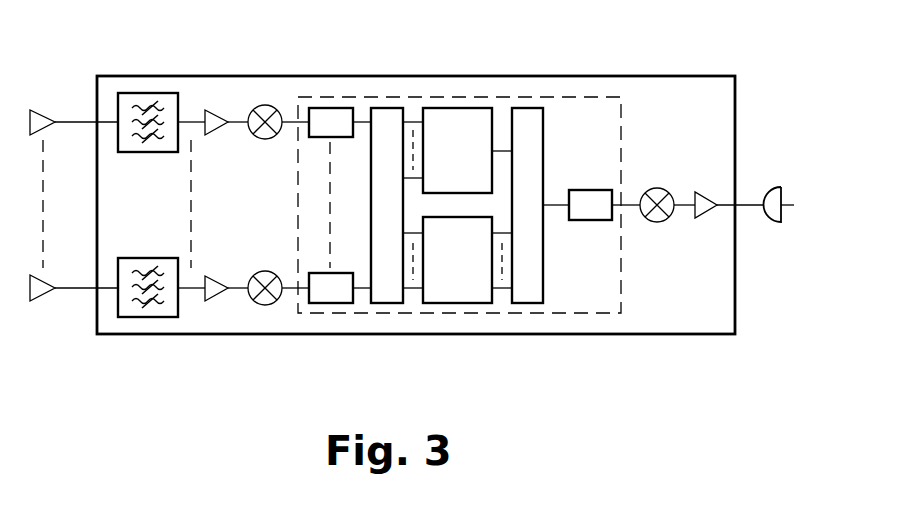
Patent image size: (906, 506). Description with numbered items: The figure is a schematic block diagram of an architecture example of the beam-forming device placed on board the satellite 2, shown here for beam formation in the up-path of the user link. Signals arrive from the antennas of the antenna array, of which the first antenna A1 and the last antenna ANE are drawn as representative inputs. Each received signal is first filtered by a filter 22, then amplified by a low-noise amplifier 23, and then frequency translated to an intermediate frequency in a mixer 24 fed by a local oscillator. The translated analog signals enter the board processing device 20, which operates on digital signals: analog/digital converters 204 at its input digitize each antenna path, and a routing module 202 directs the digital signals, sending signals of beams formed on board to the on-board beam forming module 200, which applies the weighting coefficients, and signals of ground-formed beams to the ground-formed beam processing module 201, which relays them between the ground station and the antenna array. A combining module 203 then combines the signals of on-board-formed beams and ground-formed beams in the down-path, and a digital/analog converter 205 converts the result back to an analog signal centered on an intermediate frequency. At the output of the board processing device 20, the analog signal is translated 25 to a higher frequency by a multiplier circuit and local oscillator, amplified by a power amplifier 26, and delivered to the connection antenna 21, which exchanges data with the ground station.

The satellite 2 is at (664, 74).
The board processing device 20 is at (548, 314).
The connection antenna 21 is at (771, 226).
The filter 22 is at (142, 95).
The low-noise amplifier 23 is at (215, 108).
The mixer 24 is at (265, 105).
The frequency translation 25 is at (657, 224).
The power amplifier 26 is at (705, 220).
The on-board beam forming module 200 is at (452, 122).
The ground-formed beam processing module 201 is at (460, 295).
The routing module 202 is at (385, 118).
The combining module 203 is at (525, 116).
The analog/digital converter 204 is at (335, 110).
The digital/analog converter 205 is at (581, 190).
The first receive antenna A1 is at (45, 108).
The E-th receive antenna ANE is at (48, 294).